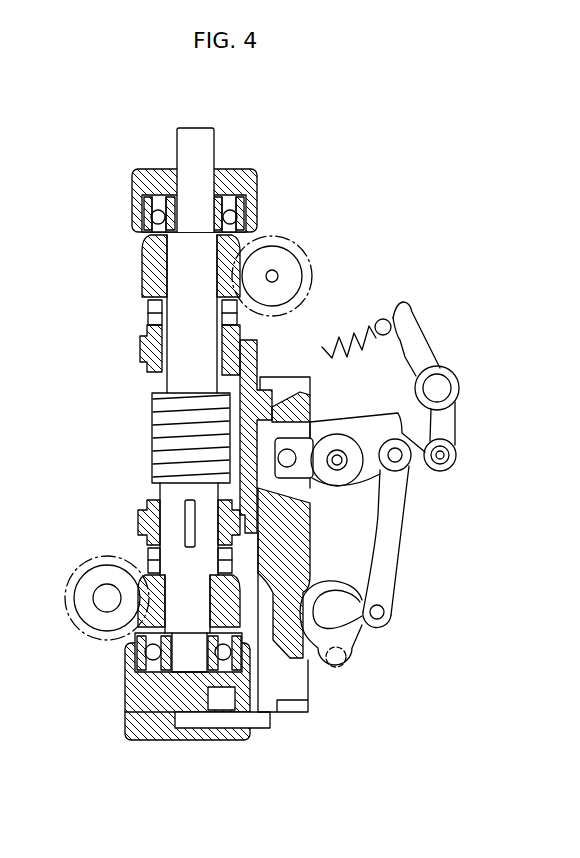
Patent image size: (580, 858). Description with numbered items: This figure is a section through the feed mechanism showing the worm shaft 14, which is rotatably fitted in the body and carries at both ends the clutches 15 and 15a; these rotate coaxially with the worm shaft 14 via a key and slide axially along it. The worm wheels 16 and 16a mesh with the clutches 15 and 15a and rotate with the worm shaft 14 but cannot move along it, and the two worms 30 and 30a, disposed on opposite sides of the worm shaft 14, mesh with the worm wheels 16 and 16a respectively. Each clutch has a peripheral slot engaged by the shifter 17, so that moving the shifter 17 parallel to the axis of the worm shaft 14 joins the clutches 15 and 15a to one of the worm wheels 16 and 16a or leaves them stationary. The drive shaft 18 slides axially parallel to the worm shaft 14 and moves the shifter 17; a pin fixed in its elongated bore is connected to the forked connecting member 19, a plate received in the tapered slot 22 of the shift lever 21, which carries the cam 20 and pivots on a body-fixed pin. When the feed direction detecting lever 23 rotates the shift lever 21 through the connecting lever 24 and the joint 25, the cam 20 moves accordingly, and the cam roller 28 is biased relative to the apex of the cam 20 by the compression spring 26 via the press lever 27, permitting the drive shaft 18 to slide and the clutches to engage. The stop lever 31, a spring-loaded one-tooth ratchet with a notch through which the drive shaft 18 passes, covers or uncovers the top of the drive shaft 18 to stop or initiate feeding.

The worm shaft 14 is at (152, 426).
The clutch 15 is at (138, 503).
The clutch 15a is at (140, 341).
The worm wheel 16 is at (138, 600).
The worm wheel 16a is at (142, 262).
The shifter 17 is at (257, 353).
The drive shaft 18 is at (297, 680).
The forked connecting member 19 is at (352, 465).
The cam 20 is at (410, 438).
The shift lever 21 is at (380, 418).
The tapered slot 22 is at (325, 488).
The feed direction detecting lever 23 is at (352, 667).
The connecting lever 24 is at (355, 622).
The joint 25 is at (390, 580).
The compression spring 26 is at (355, 335).
The press lever 27 is at (412, 330).
The cam roller 28 is at (458, 460).
The worm 30 is at (90, 582).
The worm 30a is at (288, 252).
The stop lever 31 is at (268, 720).